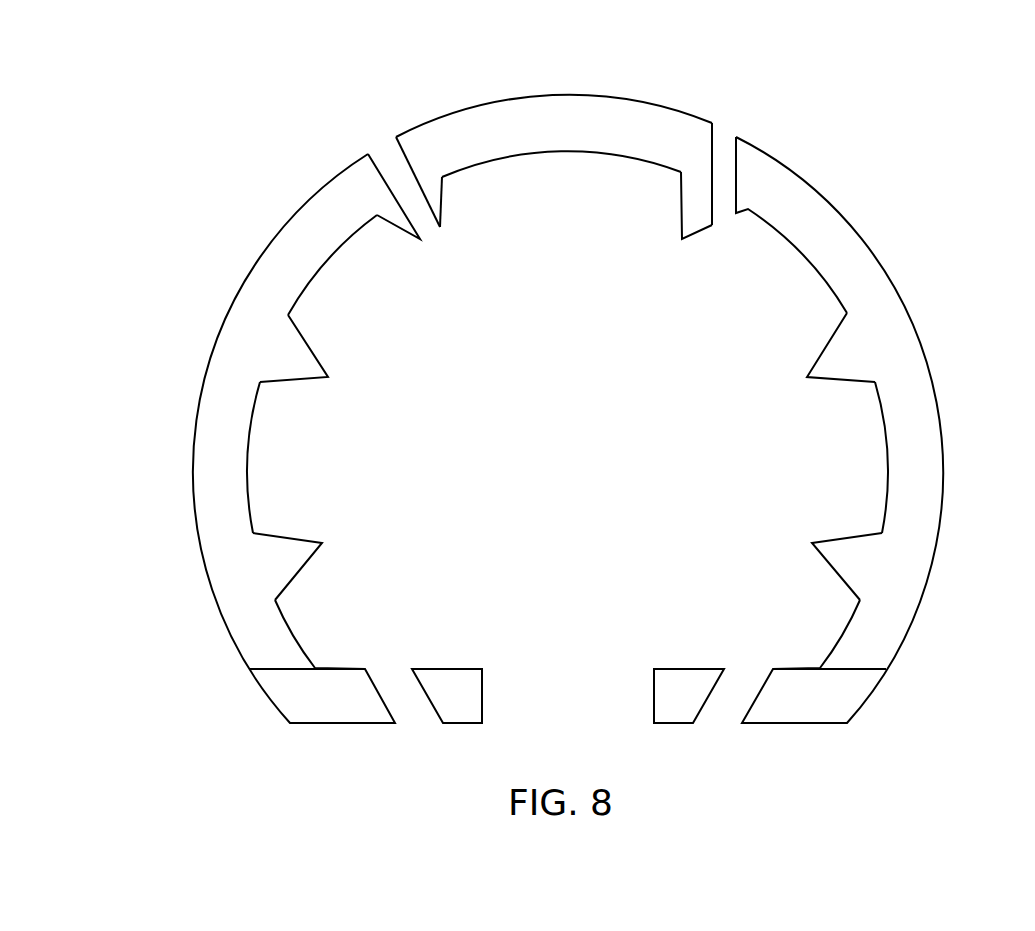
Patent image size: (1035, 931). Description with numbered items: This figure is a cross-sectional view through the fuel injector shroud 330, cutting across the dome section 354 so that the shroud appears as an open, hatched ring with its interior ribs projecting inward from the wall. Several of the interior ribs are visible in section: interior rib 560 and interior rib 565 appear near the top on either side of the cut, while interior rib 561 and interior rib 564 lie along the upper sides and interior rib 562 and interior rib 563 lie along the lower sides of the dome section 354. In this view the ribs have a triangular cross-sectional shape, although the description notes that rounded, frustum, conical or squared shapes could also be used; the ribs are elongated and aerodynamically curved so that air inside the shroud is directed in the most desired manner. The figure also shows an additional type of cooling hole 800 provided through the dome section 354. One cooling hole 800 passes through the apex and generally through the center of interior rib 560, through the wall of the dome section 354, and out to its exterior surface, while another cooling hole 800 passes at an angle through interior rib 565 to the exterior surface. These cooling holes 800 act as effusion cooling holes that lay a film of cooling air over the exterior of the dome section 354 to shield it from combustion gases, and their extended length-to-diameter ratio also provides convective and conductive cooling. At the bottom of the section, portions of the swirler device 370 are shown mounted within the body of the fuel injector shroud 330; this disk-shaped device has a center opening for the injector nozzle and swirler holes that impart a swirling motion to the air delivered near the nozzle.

The fuel injector shroud 330 is at (944, 126).
The dome section 354 is at (223, 328).
The cooling hole 800 is at (382, 152).
The interior rib 560 is at (443, 179).
The interior rib 565 is at (680, 202).
The interior rib 561 is at (312, 343).
The interior rib 562 is at (295, 537).
The interior rib 563 is at (843, 537).
The interior rib 564 is at (827, 343).
The swirler device 370 is at (680, 735).